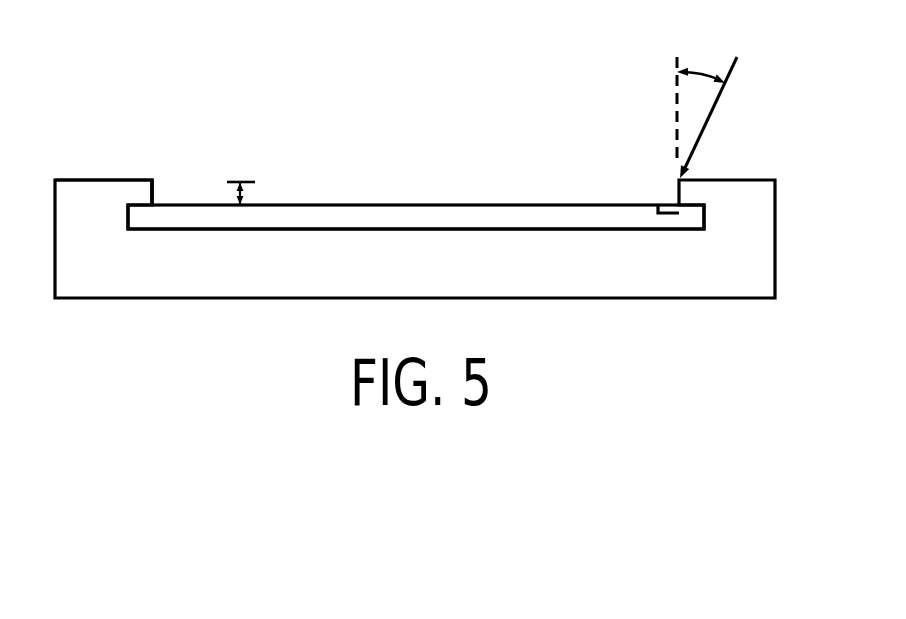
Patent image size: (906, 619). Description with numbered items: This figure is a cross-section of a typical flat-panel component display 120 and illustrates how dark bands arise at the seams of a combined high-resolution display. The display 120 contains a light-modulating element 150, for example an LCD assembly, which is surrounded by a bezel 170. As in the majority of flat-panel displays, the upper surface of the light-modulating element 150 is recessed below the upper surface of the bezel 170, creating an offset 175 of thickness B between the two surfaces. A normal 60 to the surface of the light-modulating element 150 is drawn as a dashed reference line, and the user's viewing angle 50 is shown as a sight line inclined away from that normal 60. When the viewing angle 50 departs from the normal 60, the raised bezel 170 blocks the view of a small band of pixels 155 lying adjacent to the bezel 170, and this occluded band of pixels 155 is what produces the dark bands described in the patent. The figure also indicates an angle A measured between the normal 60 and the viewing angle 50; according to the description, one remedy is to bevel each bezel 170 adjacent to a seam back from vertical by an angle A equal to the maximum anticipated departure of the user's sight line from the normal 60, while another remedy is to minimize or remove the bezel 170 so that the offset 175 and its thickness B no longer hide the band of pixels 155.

The display 120 is at (348, 178).
The bezel 170 is at (79, 178).
The offset 175 is at (153, 192).
The light-modulating element 150 is at (408, 208).
The band of pixels 155 is at (657, 213).
The thickness of the offset B is at (238, 181).
The normal 60 is at (677, 127).
The viewing angle 50 is at (705, 130).
The bevel angle A is at (700, 72).